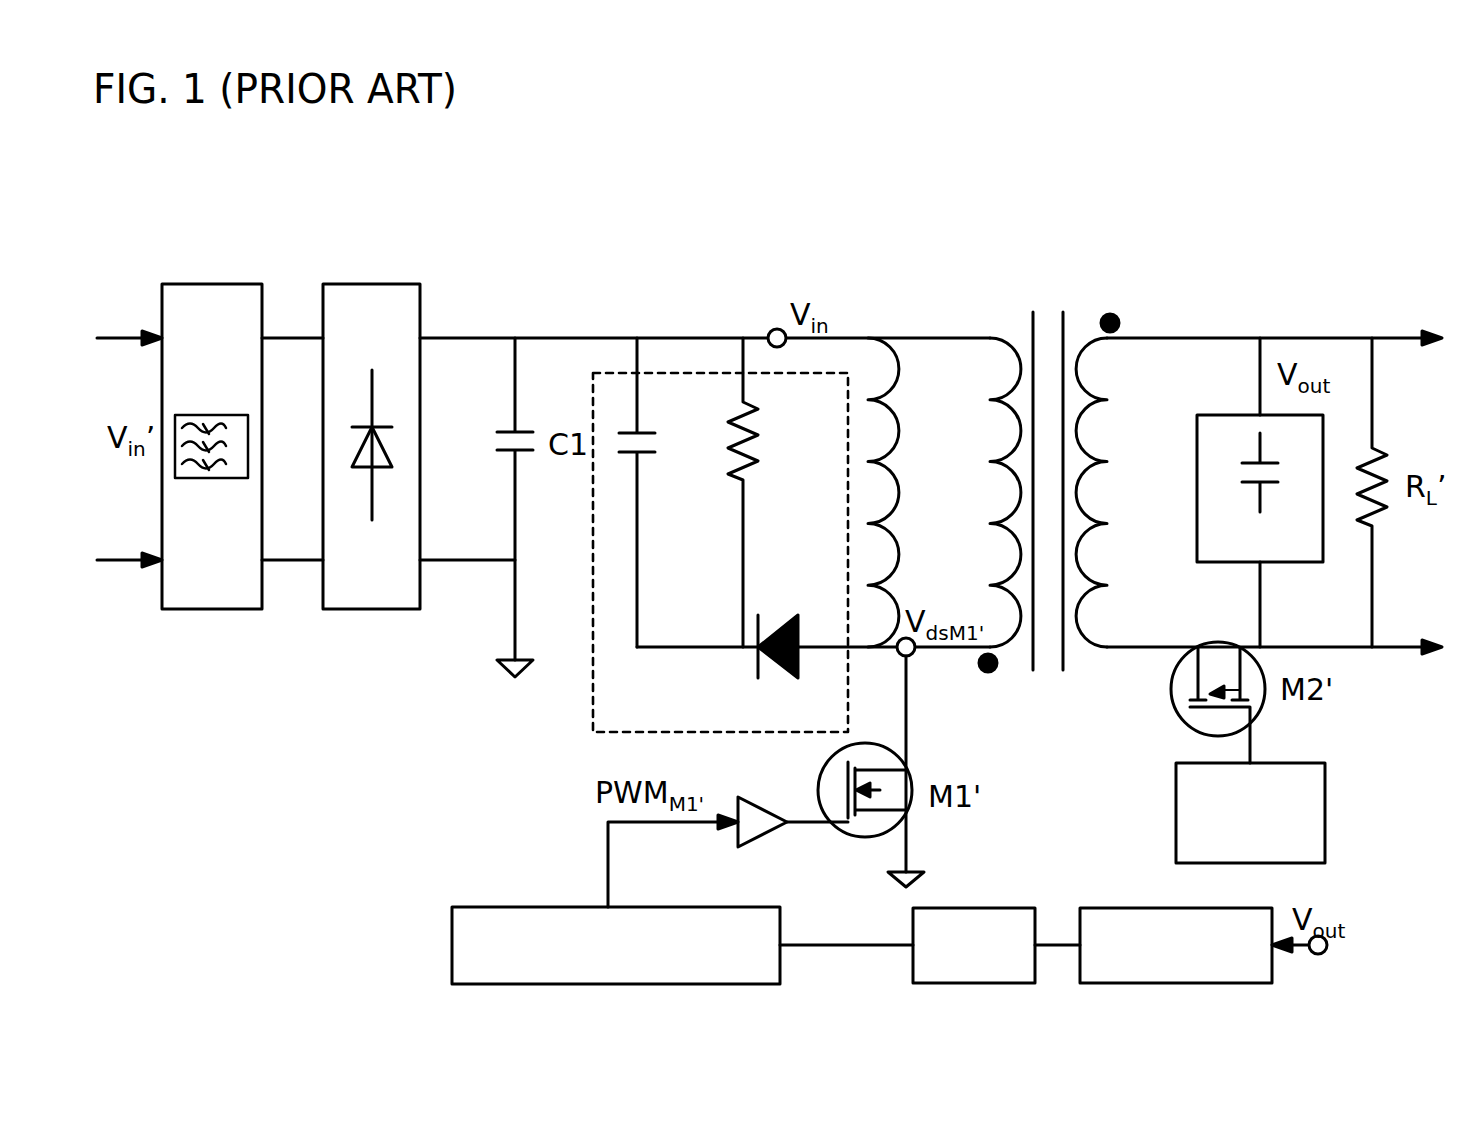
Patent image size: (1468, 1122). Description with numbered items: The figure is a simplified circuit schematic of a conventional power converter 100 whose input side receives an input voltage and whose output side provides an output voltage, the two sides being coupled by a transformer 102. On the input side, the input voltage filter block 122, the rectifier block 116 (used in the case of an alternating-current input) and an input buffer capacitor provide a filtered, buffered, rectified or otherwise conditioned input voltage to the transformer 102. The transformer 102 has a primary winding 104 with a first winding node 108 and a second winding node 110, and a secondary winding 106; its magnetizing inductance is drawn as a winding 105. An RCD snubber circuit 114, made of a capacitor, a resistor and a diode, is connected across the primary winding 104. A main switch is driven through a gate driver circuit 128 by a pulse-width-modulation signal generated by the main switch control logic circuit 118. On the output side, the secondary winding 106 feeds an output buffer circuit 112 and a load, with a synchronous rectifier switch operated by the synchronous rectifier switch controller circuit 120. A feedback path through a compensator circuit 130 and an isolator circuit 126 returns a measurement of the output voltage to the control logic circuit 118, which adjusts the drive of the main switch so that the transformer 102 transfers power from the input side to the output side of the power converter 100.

The power converter 100 is at (160, 205).
The transformer 102 is at (1033, 670).
The primary winding 104 is at (953, 430).
The winding 105 is at (898, 505).
The secondary winding 106 is at (1148, 287).
The first winding node 108 is at (771, 331).
The second winding node 110 is at (912, 657).
The output buffer circuit 112 is at (1311, 553).
The RCD snubber circuit 114 is at (674, 715).
The rectifier block 116 is at (399, 605).
The main switch control logic circuit 118 is at (766, 978).
The synchronous rectifier switch controller circuit 120 is at (1316, 855).
The input voltage filter block 122 is at (240, 605).
The isolator circuit 126 is at (1018, 907).
The gate driver circuit 128 is at (744, 845).
The compensator circuit 130 is at (1158, 907).